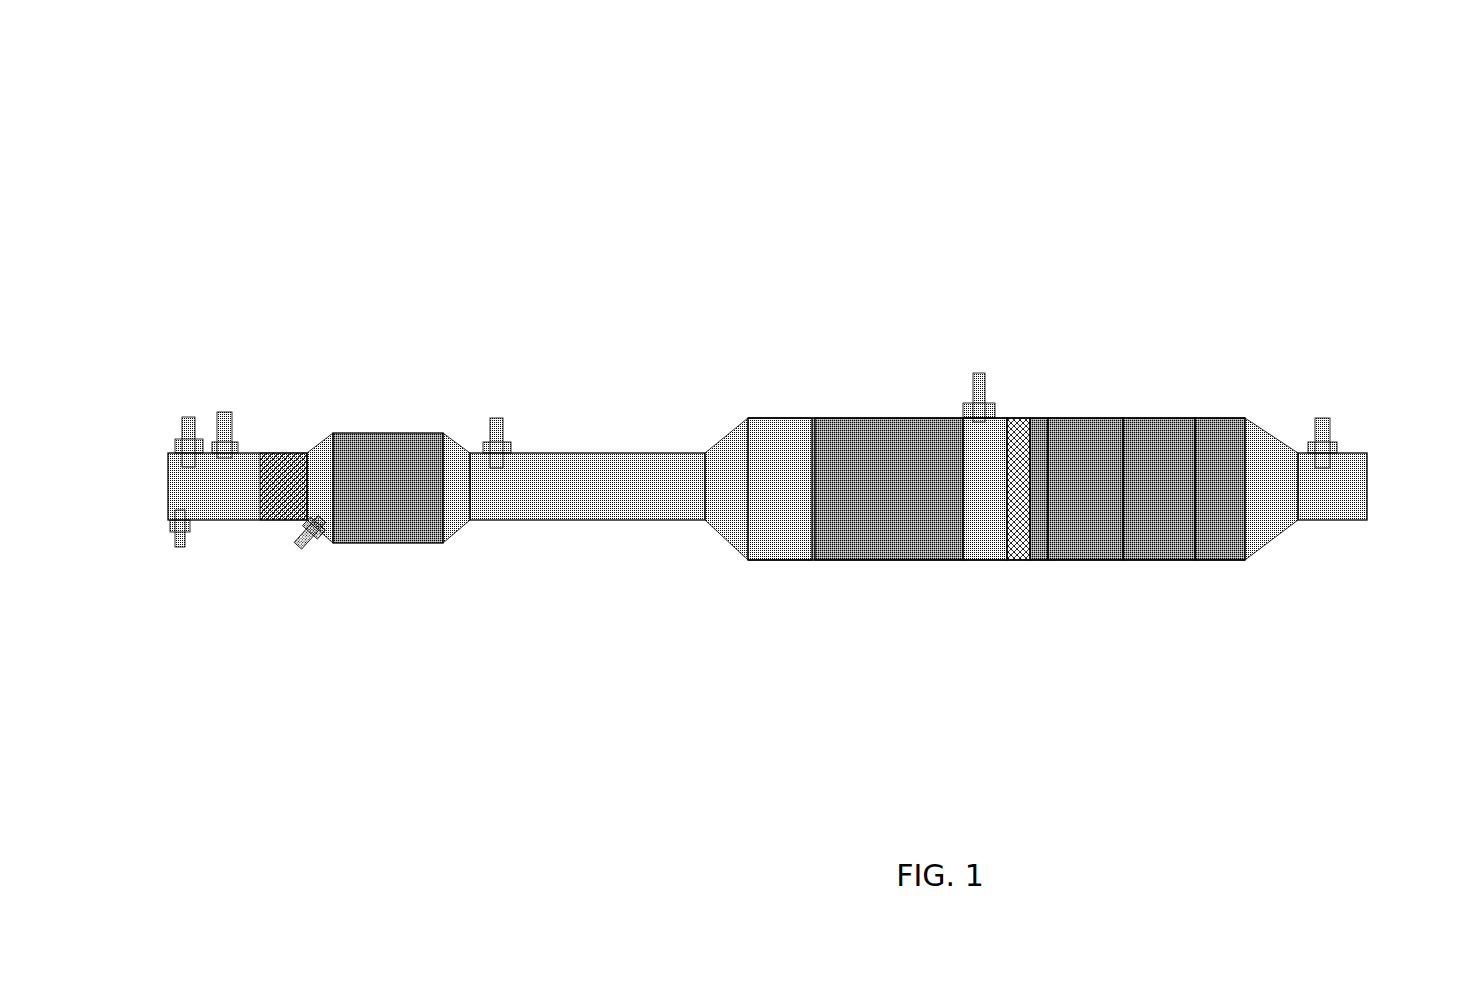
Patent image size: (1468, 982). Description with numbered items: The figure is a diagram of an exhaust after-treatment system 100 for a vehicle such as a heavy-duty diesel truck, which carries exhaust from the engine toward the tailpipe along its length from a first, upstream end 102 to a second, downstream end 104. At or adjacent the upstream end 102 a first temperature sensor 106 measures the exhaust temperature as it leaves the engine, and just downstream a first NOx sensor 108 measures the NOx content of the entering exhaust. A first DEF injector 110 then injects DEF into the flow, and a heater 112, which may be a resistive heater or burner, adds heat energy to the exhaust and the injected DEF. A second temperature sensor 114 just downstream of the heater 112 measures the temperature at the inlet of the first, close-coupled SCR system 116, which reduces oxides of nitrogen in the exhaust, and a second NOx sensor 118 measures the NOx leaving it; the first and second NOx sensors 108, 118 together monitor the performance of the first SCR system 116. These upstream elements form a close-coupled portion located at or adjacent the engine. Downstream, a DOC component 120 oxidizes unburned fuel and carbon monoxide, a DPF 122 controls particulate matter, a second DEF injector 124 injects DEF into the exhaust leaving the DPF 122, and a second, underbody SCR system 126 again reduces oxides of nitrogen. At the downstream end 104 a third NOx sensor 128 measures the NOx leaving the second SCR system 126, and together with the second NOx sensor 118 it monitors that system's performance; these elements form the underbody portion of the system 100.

The exhaust after-treatment system 100 is at (225, 132).
The first, upstream end 102 is at (158, 488).
The second, downstream end 104 is at (1372, 482).
The first temperature sensor 106 is at (178, 547).
The first NOx sensor 108 is at (190, 417).
The first DEF injector 110 is at (225, 412).
The heater 112 is at (288, 478).
The second temperature sensor 114 is at (302, 550).
The first, close-coupled SCR system 116 is at (386, 528).
The second NOx sensor 118 is at (497, 418).
The DOC component 120 is at (772, 427).
The DPF 122 is at (882, 433).
The second DEF injector 124 is at (973, 378).
The second, underbody SCR system 126 is at (1095, 433).
The third NOx sensor 128 is at (1320, 418).